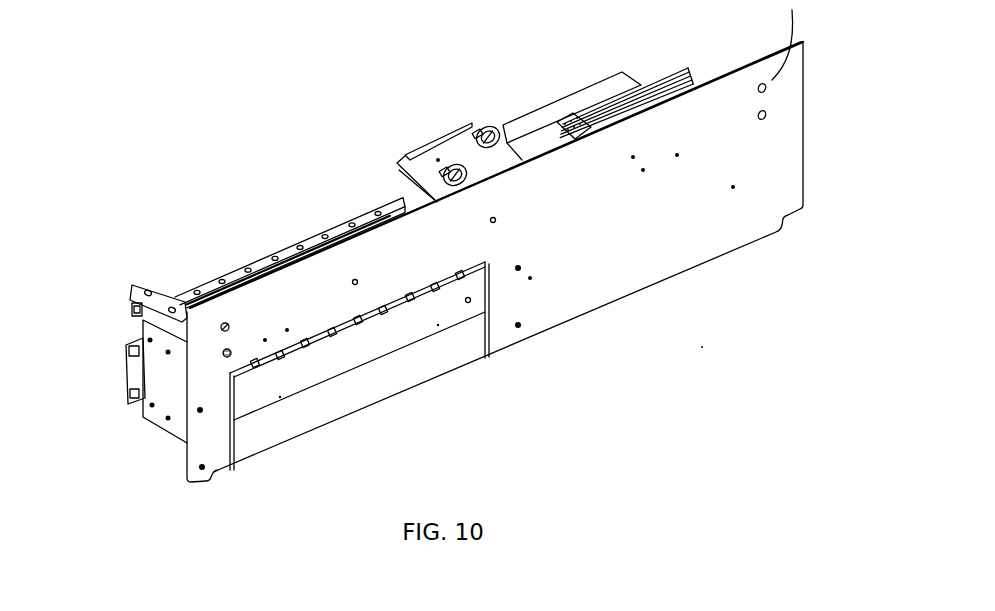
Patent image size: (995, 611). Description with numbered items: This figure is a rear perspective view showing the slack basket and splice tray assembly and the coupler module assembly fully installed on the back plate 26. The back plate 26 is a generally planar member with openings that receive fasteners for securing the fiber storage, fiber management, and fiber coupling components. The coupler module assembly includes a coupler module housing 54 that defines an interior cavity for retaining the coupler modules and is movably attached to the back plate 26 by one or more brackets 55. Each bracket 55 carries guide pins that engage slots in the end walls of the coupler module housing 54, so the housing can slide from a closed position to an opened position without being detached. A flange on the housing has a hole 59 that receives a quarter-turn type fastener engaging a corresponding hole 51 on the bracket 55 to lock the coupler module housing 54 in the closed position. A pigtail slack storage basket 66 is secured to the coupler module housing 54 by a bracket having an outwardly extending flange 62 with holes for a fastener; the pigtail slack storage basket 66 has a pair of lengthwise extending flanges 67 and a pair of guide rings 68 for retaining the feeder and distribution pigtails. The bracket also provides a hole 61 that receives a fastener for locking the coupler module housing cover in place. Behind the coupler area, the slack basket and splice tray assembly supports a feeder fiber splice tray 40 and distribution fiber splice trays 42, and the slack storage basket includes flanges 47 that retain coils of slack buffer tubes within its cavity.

The back plate 26 is at (660, 240).
The coupler module housing 54 is at (407, 372).
The bracket 55 is at (168, 383).
The flange 62 is at (157, 285).
The hole 61 is at (130, 307).
The hole 59 is at (90, 371).
The hole 51 is at (132, 343).
The pigtail slack storage basket 66 is at (408, 190).
The lengthwise extending flange 67 is at (442, 135).
The guide ring 68 is at (489, 125).
The flange 47 is at (597, 88).
The feeder fiber splice tray 40 is at (642, 69).
The distribution fiber splice tray 42 is at (672, 70).